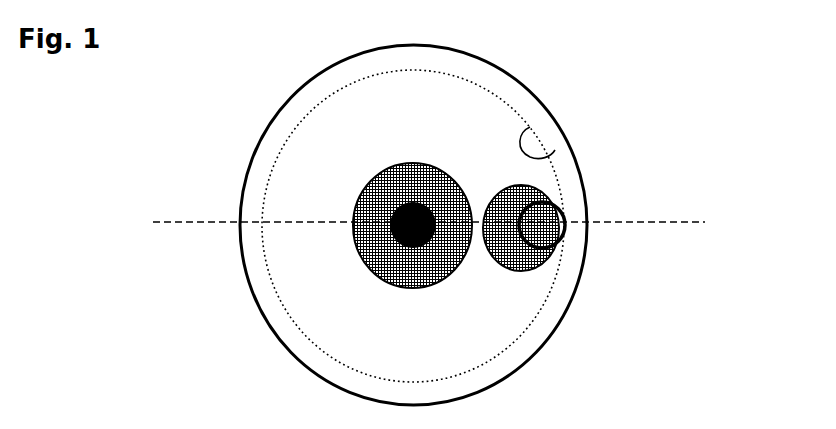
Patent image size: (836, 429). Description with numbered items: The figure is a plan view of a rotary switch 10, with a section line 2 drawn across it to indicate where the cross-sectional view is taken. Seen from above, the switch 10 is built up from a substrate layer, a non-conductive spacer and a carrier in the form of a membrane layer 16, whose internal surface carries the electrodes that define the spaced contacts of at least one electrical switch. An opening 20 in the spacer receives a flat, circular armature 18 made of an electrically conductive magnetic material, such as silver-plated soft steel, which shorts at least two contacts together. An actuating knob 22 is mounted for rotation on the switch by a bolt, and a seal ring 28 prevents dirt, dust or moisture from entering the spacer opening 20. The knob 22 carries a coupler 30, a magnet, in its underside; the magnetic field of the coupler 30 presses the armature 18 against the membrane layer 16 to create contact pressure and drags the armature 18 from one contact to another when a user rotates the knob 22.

The section line 2 is at (153, 222).
The rotary switch 10 is at (608, 195).
The membrane layer 16 is at (528, 102).
The armature 18 is at (572, 160).
The opening 20 is at (525, 197).
The actuating knob 22 is at (495, 312).
The seal ring 28 is at (430, 183).
The coupler 30 is at (553, 236).